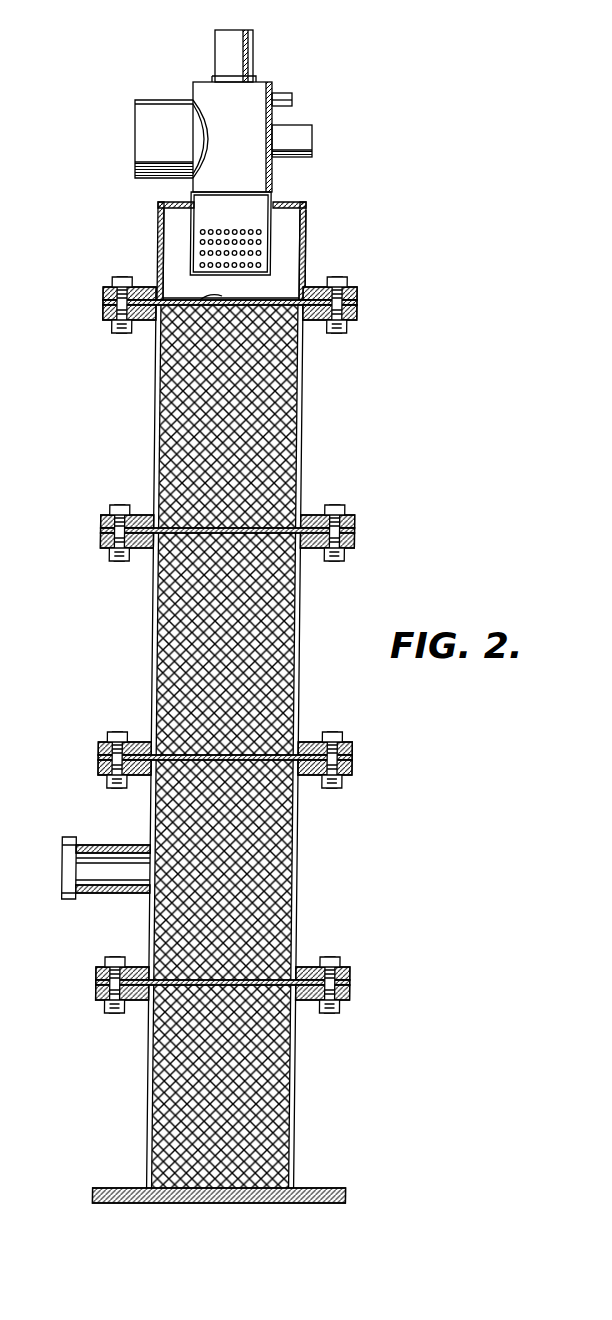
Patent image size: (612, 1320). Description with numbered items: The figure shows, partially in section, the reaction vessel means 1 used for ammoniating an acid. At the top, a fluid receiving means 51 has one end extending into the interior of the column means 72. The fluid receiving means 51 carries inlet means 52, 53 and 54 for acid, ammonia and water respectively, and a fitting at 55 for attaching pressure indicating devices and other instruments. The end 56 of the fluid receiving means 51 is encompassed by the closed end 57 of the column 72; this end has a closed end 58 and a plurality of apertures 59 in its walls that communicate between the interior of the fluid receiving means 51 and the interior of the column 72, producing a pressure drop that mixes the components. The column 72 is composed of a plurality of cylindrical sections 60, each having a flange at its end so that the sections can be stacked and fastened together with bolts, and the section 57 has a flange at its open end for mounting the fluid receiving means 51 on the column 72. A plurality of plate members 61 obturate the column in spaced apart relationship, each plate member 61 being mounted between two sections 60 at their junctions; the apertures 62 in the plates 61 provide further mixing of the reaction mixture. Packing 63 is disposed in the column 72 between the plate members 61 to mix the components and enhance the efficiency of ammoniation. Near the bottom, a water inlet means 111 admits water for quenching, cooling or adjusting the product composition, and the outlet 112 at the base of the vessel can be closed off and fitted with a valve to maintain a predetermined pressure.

The reaction vessel means 1 is at (367, 380).
The fluid receiving means 51 is at (232, 134).
The inlet means for acid 52 is at (150, 158).
The inlet means for ammonia 53 is at (250, 55).
The inlet means for water 54 is at (300, 138).
The means for attaching pressure indicating devices 55 is at (293, 99).
The end of the fluid receiving means 56 is at (298, 222).
The closed end of the column 57 is at (288, 204).
The closed end 58 is at (262, 284).
The apertures 59 is at (206, 233).
The cylindrical sections 60 is at (303, 478).
The plate members 61 is at (153, 331).
The apertures in plates 62 is at (222, 287).
The packing 63 is at (225, 746).
The column means 72 is at (156, 420).
The water inlet means 111 is at (95, 846).
The outlet 112 is at (165, 1207).